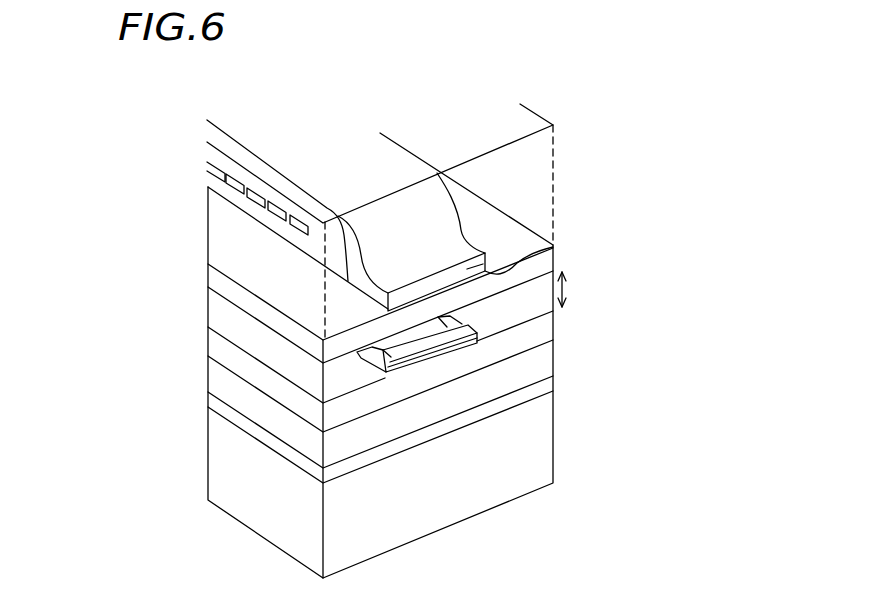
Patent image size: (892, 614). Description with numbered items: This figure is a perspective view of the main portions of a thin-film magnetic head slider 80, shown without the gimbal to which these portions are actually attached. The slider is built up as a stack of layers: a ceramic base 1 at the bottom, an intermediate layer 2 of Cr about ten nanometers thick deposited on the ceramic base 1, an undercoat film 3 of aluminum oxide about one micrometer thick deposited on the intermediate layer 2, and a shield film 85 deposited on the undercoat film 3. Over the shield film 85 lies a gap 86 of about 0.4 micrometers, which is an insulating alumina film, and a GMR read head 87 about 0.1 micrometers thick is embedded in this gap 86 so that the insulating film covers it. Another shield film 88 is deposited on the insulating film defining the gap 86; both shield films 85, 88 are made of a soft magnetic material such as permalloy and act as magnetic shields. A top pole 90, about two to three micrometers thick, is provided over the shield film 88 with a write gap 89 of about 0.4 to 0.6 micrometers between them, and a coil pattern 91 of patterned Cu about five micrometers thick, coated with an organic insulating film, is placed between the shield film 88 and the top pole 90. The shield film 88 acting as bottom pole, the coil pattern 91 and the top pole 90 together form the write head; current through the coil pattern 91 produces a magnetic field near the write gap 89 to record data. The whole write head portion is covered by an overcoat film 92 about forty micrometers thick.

The ceramic base 1 is at (547, 428).
The intermediate layer 2 is at (553, 383).
The undercoat film 3 is at (540, 362).
The thin-film magnetic head slider 80 is at (143, 304).
The shield film 85 is at (555, 324).
The gap 86 is at (565, 288).
The GMR read head 87 is at (545, 317).
The shield film 88 is at (545, 267).
The write gap 89 is at (550, 246).
The top pole 90 is at (492, 250).
The coil pattern 91 is at (222, 182).
The overcoat film 92 is at (543, 153).